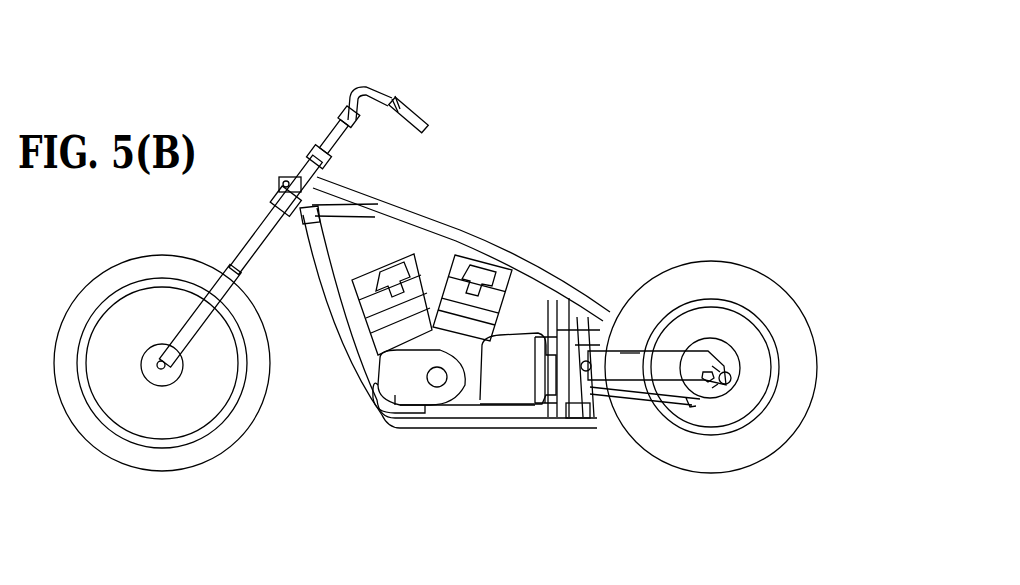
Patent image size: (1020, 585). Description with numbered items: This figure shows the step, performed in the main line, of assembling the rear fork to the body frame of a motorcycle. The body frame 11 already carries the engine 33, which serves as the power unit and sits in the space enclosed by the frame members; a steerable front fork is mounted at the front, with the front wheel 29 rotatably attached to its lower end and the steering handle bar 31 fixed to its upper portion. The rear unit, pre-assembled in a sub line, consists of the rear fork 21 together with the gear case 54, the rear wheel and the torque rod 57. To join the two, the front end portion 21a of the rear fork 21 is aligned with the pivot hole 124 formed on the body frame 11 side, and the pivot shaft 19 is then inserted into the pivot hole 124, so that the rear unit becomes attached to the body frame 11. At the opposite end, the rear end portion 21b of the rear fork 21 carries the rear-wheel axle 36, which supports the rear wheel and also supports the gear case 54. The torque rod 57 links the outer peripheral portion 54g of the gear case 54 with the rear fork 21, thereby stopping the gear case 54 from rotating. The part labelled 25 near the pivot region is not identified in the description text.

The body frame 11 is at (461, 216).
The pivot shaft 19 is at (530, 398).
The rear fork 21 is at (627, 340).
The front end portion of the rear fork 21a is at (575, 285).
The rear end portion of the rear fork 21b is at (719, 365).
The pivot shaft 25 is at (590, 293).
The front wheel 29 is at (158, 460).
The steering handle bar 31 is at (380, 95).
The engine 33 is at (483, 405).
The rear-wheel axle 36 is at (710, 392).
The gear case 54 is at (727, 387).
The outer peripheral portion of the gear case 54g is at (720, 388).
The torque rod 57 is at (630, 403).
The pivot hole 124 is at (560, 393).